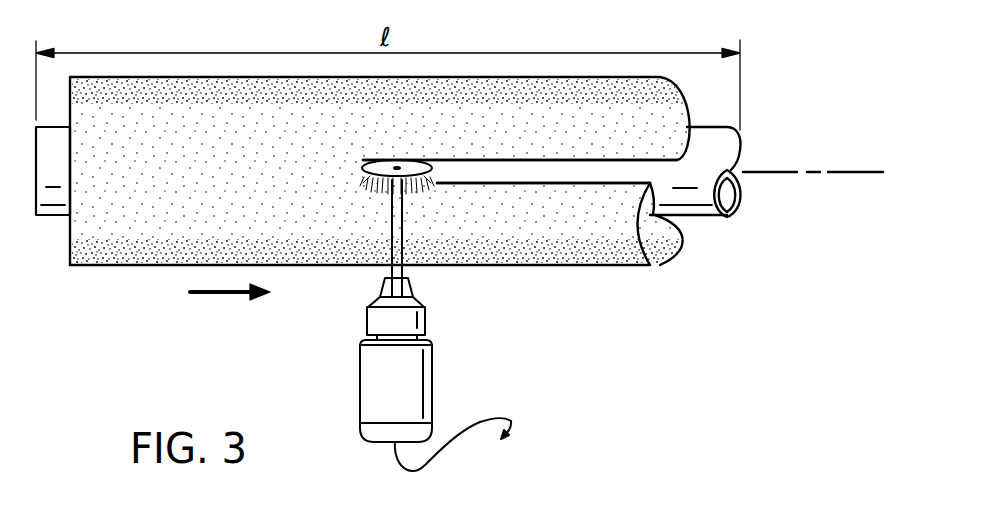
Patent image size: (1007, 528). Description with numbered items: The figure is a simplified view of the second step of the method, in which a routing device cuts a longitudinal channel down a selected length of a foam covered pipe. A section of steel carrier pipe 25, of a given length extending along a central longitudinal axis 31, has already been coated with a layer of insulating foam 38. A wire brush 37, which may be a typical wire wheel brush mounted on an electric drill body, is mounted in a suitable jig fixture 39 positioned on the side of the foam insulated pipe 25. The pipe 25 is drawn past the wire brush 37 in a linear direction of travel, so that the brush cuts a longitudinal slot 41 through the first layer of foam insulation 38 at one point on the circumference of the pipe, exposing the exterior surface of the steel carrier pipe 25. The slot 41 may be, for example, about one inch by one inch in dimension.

The carrier pipe 25 is at (52, 220).
The central longitudinal axis 31 is at (855, 172).
The wire brush 37 is at (364, 194).
The insulating foam 38 is at (473, 255).
The jig fixture 39 is at (360, 384).
The longitudinal slot 41 is at (543, 174).